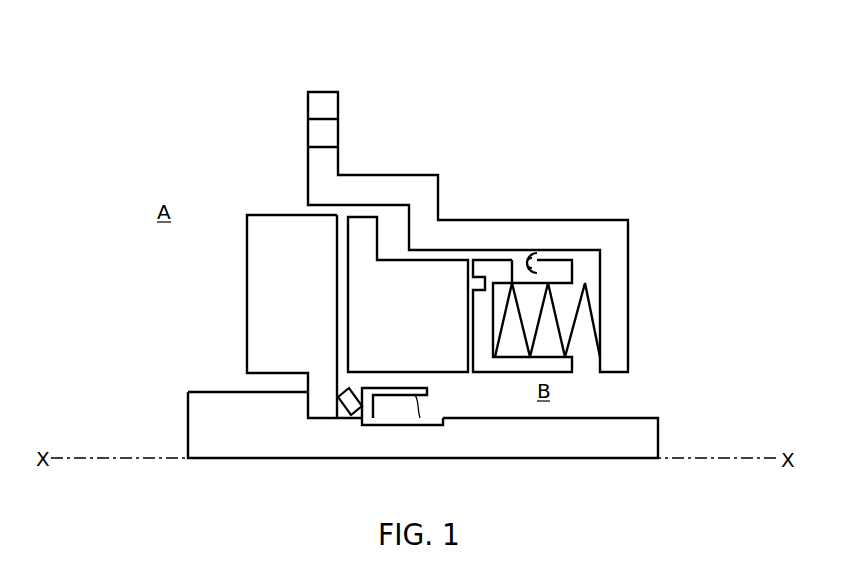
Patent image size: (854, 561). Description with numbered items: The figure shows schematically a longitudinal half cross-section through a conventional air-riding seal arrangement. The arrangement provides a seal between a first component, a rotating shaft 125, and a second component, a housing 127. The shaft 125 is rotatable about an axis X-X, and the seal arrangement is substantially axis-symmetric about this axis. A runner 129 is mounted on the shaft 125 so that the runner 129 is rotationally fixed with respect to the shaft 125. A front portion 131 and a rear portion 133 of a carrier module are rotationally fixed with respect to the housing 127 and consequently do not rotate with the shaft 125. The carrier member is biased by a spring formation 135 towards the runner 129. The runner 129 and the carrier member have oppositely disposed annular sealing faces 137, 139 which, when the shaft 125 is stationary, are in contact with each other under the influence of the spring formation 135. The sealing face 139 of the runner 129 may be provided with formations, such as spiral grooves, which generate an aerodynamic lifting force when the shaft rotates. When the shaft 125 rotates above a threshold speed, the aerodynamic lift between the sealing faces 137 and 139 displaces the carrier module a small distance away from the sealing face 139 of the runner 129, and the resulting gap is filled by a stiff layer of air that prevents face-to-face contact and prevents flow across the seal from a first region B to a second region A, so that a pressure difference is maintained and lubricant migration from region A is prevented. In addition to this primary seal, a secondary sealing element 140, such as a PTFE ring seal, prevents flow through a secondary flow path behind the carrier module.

The rotating shaft 125 is at (320, 420).
The housing 127 is at (322, 168).
The runner 129 is at (267, 230).
The front portion of carrier module 131 is at (365, 347).
The rear portion of carrier module 133 is at (557, 268).
The spring formation 135 is at (557, 317).
The annular sealing face 137 is at (335, 294).
The annular sealing face 139 is at (350, 257).
The secondary sealing element 140 is at (523, 250).